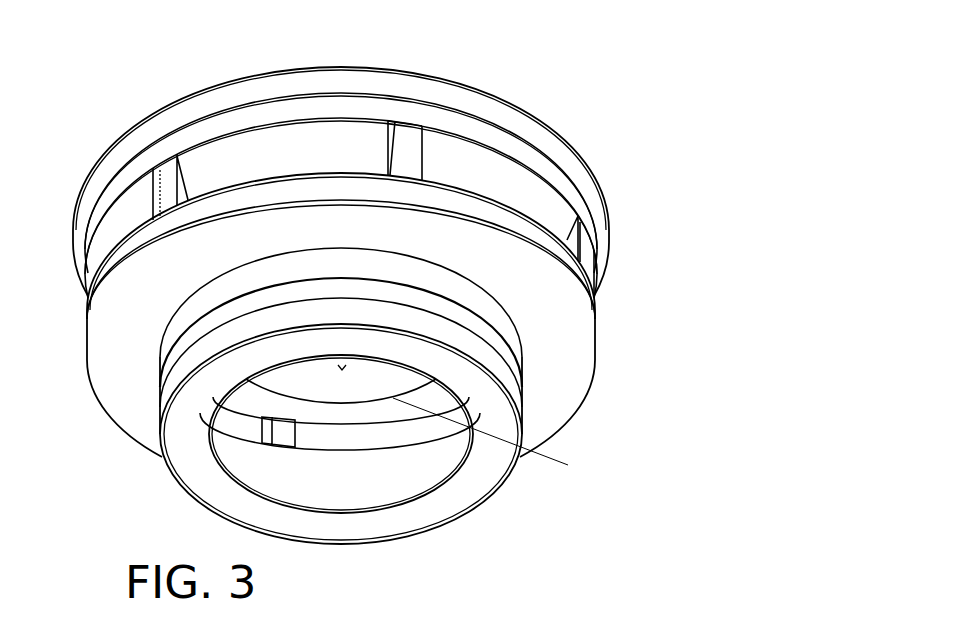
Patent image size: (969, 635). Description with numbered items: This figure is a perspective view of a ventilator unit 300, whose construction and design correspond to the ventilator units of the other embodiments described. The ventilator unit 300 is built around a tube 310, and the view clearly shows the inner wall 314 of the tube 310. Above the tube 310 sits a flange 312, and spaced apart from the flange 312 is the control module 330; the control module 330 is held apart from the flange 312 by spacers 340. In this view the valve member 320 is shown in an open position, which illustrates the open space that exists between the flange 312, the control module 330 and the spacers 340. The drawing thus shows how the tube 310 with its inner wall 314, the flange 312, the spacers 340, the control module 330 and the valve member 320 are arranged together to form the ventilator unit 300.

The ventilator unit 300 is at (590, 85).
The tube 310 is at (500, 373).
The flange 312 is at (593, 303).
The inner wall 314 is at (482, 413).
The valve member 320 is at (362, 388).
The control module 330 is at (565, 157).
The spacers 340 is at (413, 142).